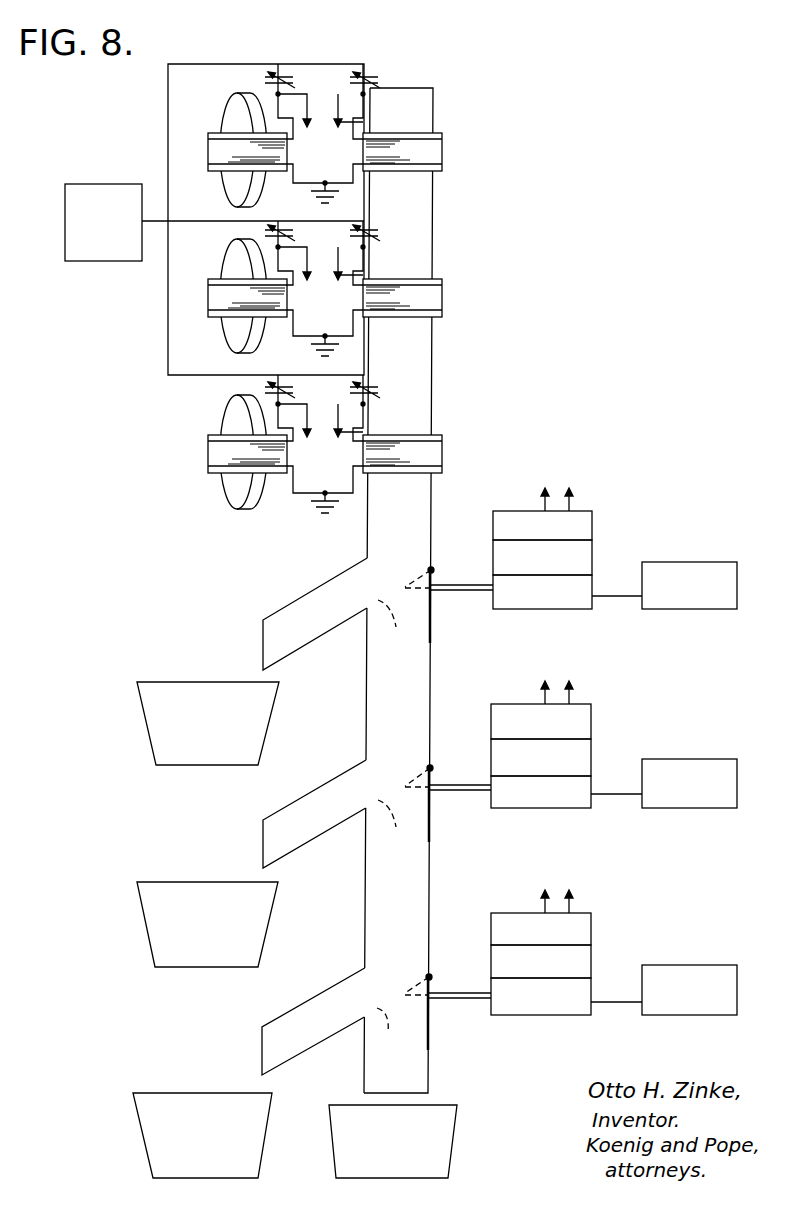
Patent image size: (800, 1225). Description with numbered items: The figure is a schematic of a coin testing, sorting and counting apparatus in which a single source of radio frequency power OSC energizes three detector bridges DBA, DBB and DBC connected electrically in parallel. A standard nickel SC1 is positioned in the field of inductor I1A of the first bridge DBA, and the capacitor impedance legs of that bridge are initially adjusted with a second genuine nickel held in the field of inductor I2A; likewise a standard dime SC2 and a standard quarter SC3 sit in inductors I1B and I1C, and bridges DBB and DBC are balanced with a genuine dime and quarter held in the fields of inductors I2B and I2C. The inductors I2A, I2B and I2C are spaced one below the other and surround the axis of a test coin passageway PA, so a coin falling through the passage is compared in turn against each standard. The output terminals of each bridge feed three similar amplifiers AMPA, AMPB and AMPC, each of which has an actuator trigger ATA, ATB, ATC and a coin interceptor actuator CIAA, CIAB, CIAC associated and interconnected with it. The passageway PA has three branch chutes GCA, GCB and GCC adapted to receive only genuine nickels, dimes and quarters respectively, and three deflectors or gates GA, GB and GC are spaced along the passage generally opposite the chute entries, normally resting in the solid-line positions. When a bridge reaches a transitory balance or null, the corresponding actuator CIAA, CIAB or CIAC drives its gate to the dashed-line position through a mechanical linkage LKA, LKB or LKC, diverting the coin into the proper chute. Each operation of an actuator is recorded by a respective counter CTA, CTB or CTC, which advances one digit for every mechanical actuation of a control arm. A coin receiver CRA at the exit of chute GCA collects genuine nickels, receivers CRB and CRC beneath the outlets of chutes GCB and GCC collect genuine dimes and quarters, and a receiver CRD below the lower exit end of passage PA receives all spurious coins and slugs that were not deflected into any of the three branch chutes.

The source of radio frequency power OSC is at (115, 235).
The test coin passageway PA is at (433, 109).
The standard nickel SC1 is at (232, 101).
The standard dime SC2 is at (231, 253).
The standard quarter SC3 is at (224, 413).
The inductor I1A is at (208, 147).
The inductor I1B is at (208, 303).
The inductor I1C is at (208, 452).
The inductor I2A is at (442, 148).
The inductor I2B is at (442, 296).
The inductor I2C is at (442, 452).
The first detector bridge DBA is at (330, 90).
The detector bridge DBB is at (331, 246).
The detector bridge DBC is at (326, 398).
The branch chute GCA is at (295, 600).
The branch chute GCB is at (306, 794).
The branch chute GCC is at (305, 1001).
The deflector or gate GA is at (431, 613).
The deflector or gate GB is at (430, 813).
The deflector or gate GC is at (429, 1015).
The mechanical linkage LKA is at (450, 592).
The mechanical linkage LKB is at (456, 792).
The mechanical linkage LKC is at (457, 1000).
The amplifier AMPA is at (542, 506).
The amplifier AMPB is at (541, 702).
The amplifier AMPC is at (541, 910).
The actuator trigger ATA is at (542, 557).
The actuator trigger ATB is at (541, 757).
The actuator trigger ATC is at (541, 961).
The coin interceptor actuator CIAA is at (542, 592).
The coin interceptor actuator CIAB is at (541, 792).
The coin interceptor actuator CIAC is at (541, 996).
The counter CTA is at (678, 562).
The counter CTB is at (680, 759).
The counter CTC is at (672, 965).
The coin receiver CRA is at (187, 760).
The coin receiver CRB is at (190, 965).
The coin receiver CRC is at (250, 1157).
The receiver for spurious coins and slugs CRD is at (442, 1157).